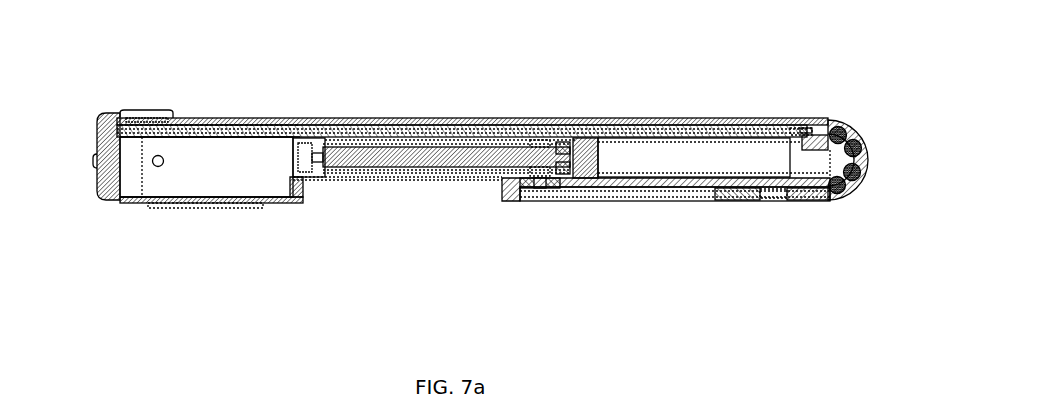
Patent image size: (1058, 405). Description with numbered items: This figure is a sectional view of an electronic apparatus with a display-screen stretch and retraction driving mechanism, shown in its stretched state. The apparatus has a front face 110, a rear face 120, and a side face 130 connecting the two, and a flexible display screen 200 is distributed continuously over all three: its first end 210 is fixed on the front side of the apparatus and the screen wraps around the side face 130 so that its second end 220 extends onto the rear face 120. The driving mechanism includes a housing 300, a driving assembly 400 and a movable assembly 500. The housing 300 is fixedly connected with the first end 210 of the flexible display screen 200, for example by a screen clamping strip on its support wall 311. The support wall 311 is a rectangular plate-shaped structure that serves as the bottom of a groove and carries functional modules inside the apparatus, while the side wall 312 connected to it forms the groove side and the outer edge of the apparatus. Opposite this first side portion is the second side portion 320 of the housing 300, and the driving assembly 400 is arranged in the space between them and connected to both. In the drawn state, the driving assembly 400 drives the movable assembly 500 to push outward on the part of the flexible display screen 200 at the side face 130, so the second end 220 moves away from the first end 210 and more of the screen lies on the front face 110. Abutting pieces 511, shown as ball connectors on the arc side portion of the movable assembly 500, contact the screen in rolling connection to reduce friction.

The front face 110 is at (437, 117).
The rear face 120 is at (601, 208).
The side face 130 is at (870, 143).
The flexible display screen 200 is at (617, 118).
The first end 210 is at (177, 118).
The second end 220 is at (787, 201).
The housing 300 is at (133, 113).
The support wall 311 is at (212, 196).
The side wall 312 is at (97, 143).
The second side portion 320 is at (583, 180).
The driving assembly 400 is at (430, 180).
The movable assembly 500 is at (705, 178).
The abutting piece 511 is at (832, 128).